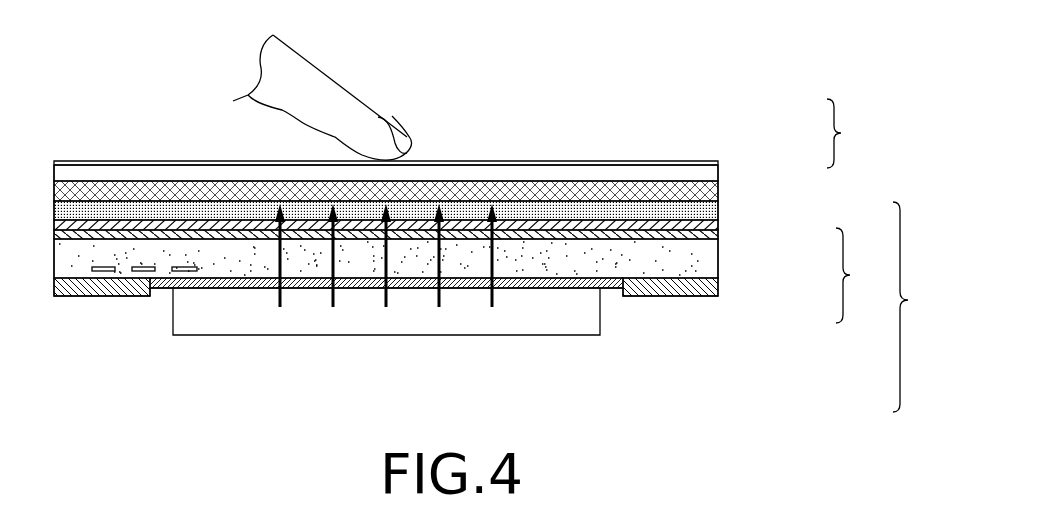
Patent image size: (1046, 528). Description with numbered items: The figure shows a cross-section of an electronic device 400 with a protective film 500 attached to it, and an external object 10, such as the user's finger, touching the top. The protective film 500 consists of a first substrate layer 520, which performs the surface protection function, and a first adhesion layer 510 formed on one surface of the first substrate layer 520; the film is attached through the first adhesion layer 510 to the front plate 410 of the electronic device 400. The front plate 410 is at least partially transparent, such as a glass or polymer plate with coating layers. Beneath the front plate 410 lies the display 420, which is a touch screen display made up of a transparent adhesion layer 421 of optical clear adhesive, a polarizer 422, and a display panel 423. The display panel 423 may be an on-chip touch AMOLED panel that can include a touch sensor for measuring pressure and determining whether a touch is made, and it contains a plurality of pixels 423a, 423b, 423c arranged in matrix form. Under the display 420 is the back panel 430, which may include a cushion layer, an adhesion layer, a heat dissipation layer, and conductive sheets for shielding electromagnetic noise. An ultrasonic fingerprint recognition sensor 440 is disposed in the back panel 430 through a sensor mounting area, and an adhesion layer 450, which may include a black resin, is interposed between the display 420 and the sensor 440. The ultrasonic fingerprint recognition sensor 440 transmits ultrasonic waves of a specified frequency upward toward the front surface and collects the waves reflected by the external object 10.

The external object 10 is at (338, 92).
The electronic device 400 is at (923, 307).
The front plate 410 is at (713, 207).
The display 420 is at (865, 275).
The transparent adhesion layer 421 is at (718, 225).
The polarizer 422 is at (718, 236).
The display panel 423 is at (718, 268).
The pixel 423a is at (100, 273).
The pixel 423b is at (140, 273).
The pixel 423c is at (185, 273).
The back panel 430 is at (712, 295).
The ultrasonic fingerprint recognition sensor 440 is at (585, 320).
The adhesion layer 450 is at (610, 293).
The protective film 500 is at (856, 133).
The first adhesion layer 510 is at (718, 190).
The first substrate layer 520 is at (710, 172).